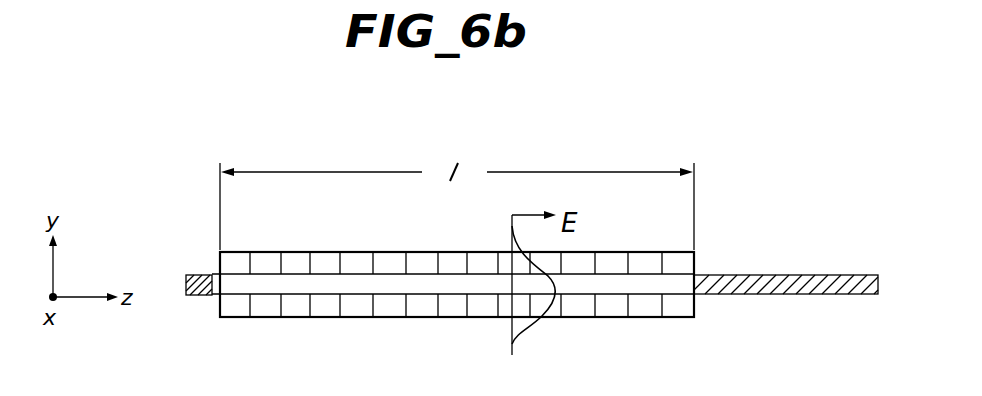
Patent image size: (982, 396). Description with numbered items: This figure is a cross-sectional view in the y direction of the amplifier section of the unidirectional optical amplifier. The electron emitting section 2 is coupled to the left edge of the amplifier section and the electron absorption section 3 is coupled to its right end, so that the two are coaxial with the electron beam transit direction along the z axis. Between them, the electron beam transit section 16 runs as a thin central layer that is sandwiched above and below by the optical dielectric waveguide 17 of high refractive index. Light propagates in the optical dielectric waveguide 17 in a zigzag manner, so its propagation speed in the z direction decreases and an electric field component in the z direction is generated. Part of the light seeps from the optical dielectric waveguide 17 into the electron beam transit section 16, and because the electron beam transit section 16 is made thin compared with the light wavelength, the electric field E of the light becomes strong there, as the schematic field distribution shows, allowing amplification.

The electron emitting section 2 is at (196, 273).
The electron absorption section 3 is at (768, 273).
The electron beam transit section 16 is at (387, 279).
The optical dielectric waveguide 17 is at (325, 265).